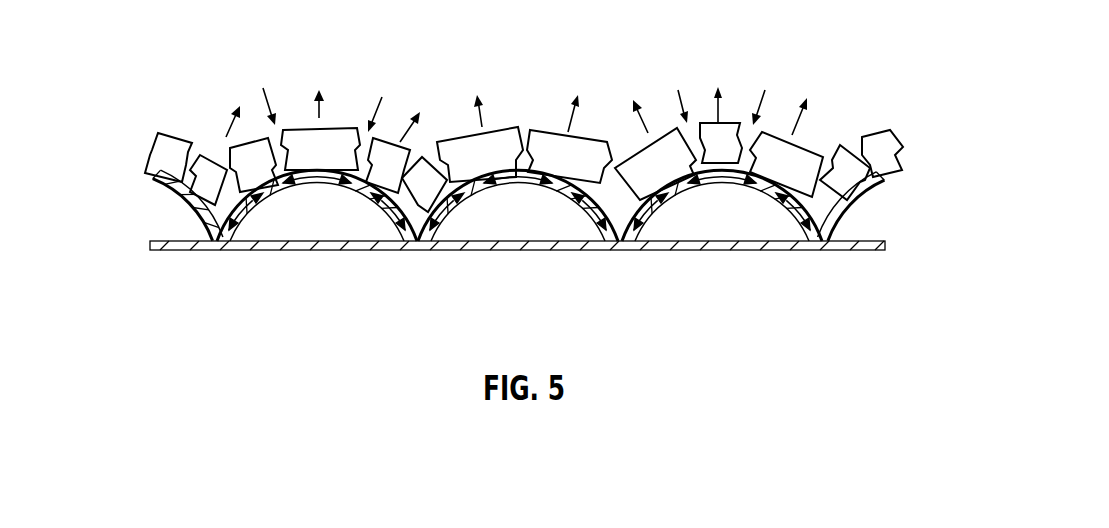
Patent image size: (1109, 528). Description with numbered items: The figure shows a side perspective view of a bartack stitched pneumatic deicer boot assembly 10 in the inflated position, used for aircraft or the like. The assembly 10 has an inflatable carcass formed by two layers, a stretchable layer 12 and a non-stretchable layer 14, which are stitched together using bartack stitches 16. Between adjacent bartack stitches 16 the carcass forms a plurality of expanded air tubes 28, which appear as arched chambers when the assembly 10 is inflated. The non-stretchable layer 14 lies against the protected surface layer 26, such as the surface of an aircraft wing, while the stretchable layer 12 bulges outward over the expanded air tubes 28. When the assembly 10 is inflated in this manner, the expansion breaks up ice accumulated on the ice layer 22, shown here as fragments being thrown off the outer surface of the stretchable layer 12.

The bartack stitched pneumatic deicer boot assembly 10 is at (511, 245).
The stretchable layer 12 is at (872, 198).
The non-stretchable layer 14 is at (877, 252).
The bartack stitches 16 is at (822, 245).
The ice layer 22 is at (885, 145).
The protected surface layer 26 is at (170, 266).
The expanded air tubes 28 is at (718, 234).